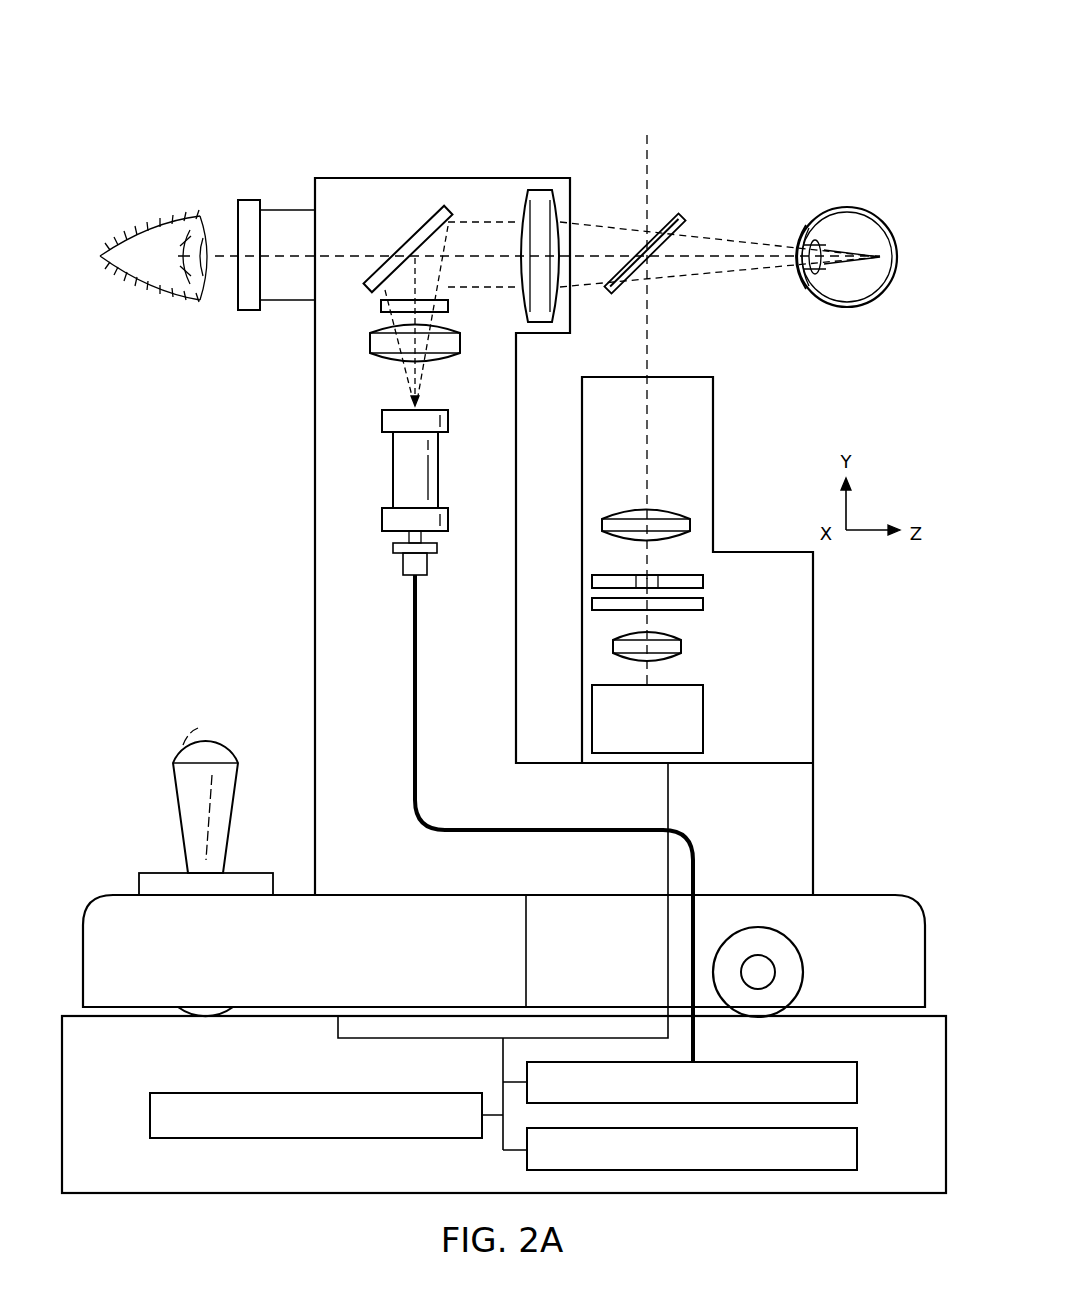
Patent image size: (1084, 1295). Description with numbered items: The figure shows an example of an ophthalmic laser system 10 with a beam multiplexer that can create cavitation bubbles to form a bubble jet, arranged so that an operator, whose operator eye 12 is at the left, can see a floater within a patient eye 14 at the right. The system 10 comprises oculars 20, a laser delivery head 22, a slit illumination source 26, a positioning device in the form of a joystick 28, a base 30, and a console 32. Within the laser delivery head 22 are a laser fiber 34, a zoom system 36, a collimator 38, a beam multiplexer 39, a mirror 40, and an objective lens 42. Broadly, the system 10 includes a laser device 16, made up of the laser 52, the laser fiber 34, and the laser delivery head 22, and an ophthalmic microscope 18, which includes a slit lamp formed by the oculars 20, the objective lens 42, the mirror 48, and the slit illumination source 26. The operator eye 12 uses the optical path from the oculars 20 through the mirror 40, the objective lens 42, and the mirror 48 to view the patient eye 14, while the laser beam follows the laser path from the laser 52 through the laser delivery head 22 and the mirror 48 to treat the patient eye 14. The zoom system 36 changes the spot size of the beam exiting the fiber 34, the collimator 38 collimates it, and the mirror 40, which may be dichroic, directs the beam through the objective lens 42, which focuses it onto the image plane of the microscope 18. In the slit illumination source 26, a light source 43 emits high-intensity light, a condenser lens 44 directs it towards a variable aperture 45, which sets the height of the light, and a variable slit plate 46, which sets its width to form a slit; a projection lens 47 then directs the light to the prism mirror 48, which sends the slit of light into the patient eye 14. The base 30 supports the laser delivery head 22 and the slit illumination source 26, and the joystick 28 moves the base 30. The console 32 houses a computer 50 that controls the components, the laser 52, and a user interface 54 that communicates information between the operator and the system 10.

The ophthalmic laser system 10 is at (708, 84).
The operator eye 12 is at (124, 240).
The patient eye 14 is at (845, 207).
The laser device 16 is at (184, 683).
The ophthalmic microscope 18 is at (770, 324).
The oculars 20 is at (249, 198).
The laser delivery head 22 is at (306, 572).
The slit illumination source 26 is at (803, 690).
The joystick 28 is at (178, 797).
The base 30 is at (373, 966).
The console 32 is at (291, 1069).
The laser fiber 34 is at (696, 862).
The zoom system 36 is at (380, 420).
The collimator 38 is at (370, 343).
The beam multiplexer 39 is at (380, 302).
The mirror 40 is at (415, 215).
The objective lens 42 is at (538, 190).
The light source 43 is at (704, 718).
The condenser lens 44 is at (613, 647).
The variable aperture 45 is at (704, 603).
The variable slit plate 46 is at (592, 580).
The projection lens 47 is at (692, 526).
The mirror 48 is at (683, 220).
The computer 50 is at (150, 1125).
The laser 52 is at (858, 1092).
The user interface 54 is at (858, 1158).